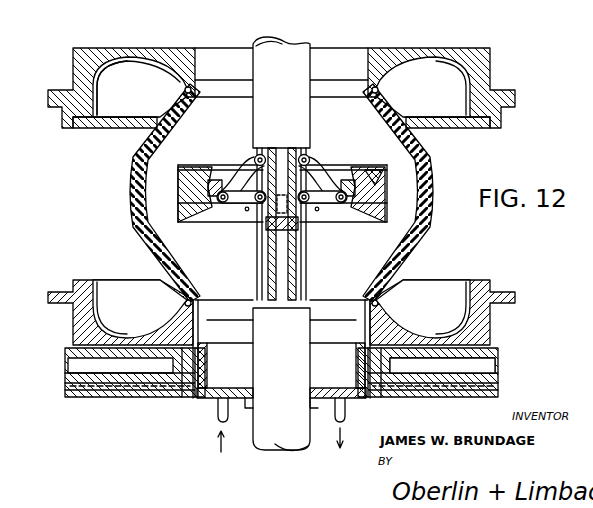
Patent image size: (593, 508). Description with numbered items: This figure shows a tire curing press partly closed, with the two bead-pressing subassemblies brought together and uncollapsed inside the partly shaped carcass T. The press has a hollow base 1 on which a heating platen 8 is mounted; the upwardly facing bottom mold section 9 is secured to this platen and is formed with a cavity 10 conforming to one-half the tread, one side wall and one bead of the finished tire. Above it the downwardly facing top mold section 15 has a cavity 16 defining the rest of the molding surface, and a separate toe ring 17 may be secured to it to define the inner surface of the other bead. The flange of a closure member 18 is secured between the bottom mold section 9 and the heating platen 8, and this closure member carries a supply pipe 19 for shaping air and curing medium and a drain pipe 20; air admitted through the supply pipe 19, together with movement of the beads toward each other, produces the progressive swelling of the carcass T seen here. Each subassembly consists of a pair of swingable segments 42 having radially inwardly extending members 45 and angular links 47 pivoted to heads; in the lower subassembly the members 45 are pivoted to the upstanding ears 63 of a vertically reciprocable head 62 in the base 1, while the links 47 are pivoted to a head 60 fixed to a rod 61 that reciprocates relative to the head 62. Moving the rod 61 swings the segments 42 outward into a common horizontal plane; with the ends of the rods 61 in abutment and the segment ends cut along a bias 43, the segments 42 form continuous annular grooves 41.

The hollow base 1 is at (115, 393).
The heating platen 8 is at (498, 349).
The bottom mold section 9 is at (490, 285).
The cavity 10 is at (440, 333).
The top mold section 15 is at (491, 53).
The cavity 16 is at (425, 60).
The toe ring 17 is at (330, 80).
The closure member 18 is at (205, 397).
The supply pipe 19 is at (217, 420).
The drain pipe 20 is at (346, 410).
The annular grooves 41 is at (372, 168).
The swingable segments 42 is at (356, 165).
The bias 43 is at (222, 165).
The radially inwardly extending members 45 is at (250, 205).
The angular links 47 is at (256, 178).
The head 60 is at (296, 262).
The rod 61 is at (282, 165).
The head 62 is at (300, 46).
The upstanding ears 63 is at (257, 289).
The carcass T is at (431, 160).